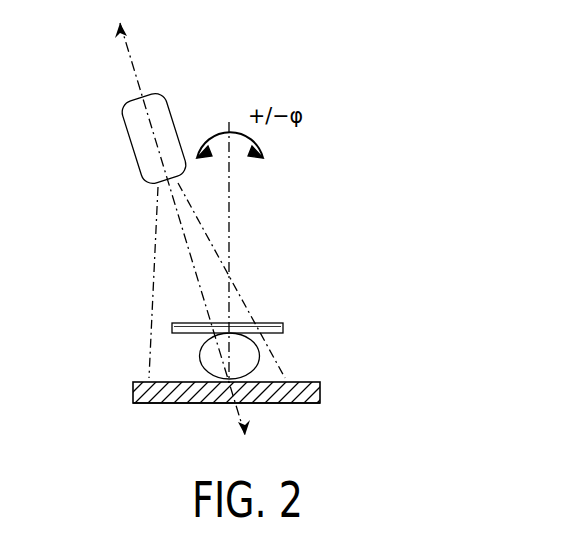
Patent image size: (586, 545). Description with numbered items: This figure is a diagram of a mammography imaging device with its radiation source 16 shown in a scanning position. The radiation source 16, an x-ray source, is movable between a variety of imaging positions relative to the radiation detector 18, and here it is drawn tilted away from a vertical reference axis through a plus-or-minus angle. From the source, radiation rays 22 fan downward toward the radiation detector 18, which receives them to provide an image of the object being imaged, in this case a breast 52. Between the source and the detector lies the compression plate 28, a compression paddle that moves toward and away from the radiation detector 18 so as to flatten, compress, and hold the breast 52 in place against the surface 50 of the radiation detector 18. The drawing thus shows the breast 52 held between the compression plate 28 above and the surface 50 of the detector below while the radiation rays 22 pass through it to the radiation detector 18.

The radiation source 16 is at (132, 146).
The radiation rays 22 is at (153, 283).
The compression plate 28 is at (283, 330).
The breast 52 is at (256, 351).
The surface of the radiation detector 50 is at (320, 388).
The radiation detector 18 is at (272, 403).